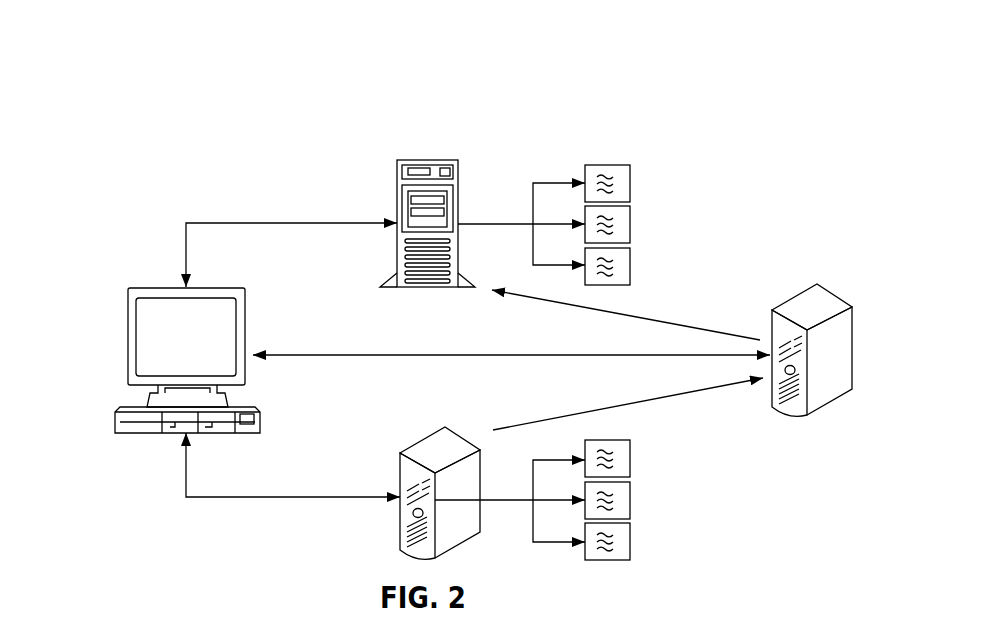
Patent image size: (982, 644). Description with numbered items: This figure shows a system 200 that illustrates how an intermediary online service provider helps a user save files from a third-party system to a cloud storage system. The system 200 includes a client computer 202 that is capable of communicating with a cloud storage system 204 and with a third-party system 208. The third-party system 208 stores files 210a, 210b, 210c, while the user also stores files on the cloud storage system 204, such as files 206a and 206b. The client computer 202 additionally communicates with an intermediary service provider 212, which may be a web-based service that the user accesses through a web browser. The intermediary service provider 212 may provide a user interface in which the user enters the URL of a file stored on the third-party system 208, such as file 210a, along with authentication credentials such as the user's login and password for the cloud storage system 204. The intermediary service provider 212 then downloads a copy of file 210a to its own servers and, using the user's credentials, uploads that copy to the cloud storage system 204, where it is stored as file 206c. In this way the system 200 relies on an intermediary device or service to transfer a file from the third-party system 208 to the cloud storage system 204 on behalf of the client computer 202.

The system 200 is at (130, 62).
The client computer 202 is at (170, 286).
The cloud storage system 204 is at (429, 160).
The file 206a is at (632, 182).
The file 206b is at (632, 223).
The file 206c is at (632, 265).
The third-party system 208 is at (430, 437).
The file 210a is at (632, 458).
The file 210b is at (632, 499).
The file 210c is at (632, 540).
The intermediary service provider 212 is at (826, 286).